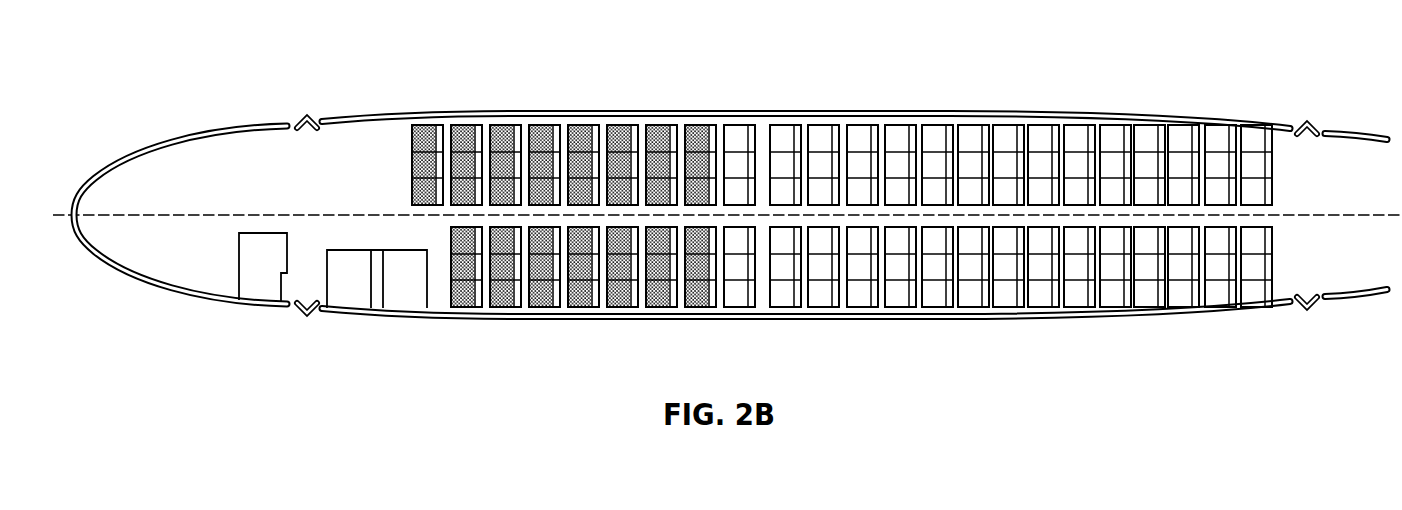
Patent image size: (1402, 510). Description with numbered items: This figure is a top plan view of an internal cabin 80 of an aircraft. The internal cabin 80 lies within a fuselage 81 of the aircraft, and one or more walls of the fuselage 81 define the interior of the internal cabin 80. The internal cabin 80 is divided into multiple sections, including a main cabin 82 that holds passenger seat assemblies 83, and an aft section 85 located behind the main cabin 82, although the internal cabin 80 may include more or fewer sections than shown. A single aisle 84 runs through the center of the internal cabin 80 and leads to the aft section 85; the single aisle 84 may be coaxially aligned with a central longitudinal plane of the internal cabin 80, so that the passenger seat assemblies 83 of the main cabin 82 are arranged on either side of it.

The internal cabin 80 is at (326, 55).
The fuselage 81 is at (528, 115).
The main cabin 82 is at (467, 147).
The passenger seat assemblies 83 is at (740, 147).
The single aisle 84 is at (862, 208).
The aft section 85 is at (1292, 148).